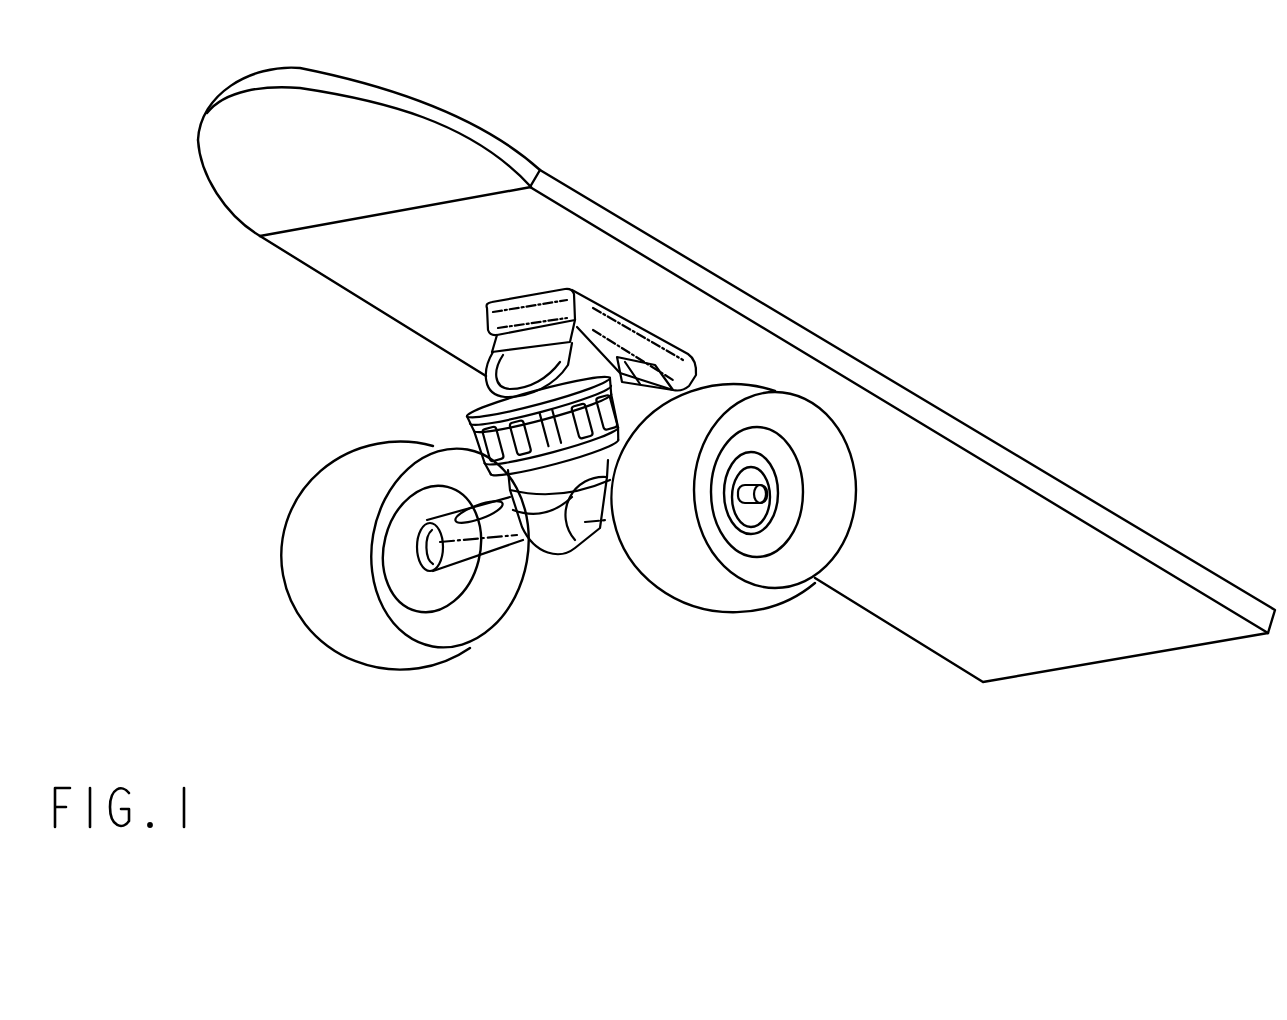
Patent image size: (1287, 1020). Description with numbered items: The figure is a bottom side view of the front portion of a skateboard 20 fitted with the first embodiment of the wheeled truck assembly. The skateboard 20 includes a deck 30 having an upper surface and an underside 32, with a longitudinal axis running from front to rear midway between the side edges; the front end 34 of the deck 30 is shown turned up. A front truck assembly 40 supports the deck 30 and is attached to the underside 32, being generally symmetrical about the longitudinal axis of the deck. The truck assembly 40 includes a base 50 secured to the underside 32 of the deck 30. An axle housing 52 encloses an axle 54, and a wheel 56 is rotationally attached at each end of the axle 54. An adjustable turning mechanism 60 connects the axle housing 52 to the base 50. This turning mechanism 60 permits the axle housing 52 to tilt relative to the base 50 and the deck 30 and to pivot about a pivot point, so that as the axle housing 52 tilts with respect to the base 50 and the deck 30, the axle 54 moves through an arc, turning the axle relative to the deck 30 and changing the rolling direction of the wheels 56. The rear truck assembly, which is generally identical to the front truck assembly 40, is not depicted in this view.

The skateboard 20 is at (1135, 358).
The deck 30 is at (623, 220).
The underside 32 is at (717, 307).
The front end 34 is at (468, 112).
The front truck assembly 40 is at (567, 575).
The base 50 is at (703, 362).
The axle housing 52 is at (601, 568).
The axle 54 is at (763, 510).
The wheel 56 is at (373, 657).
The adjustable turning mechanism 60 is at (468, 407).